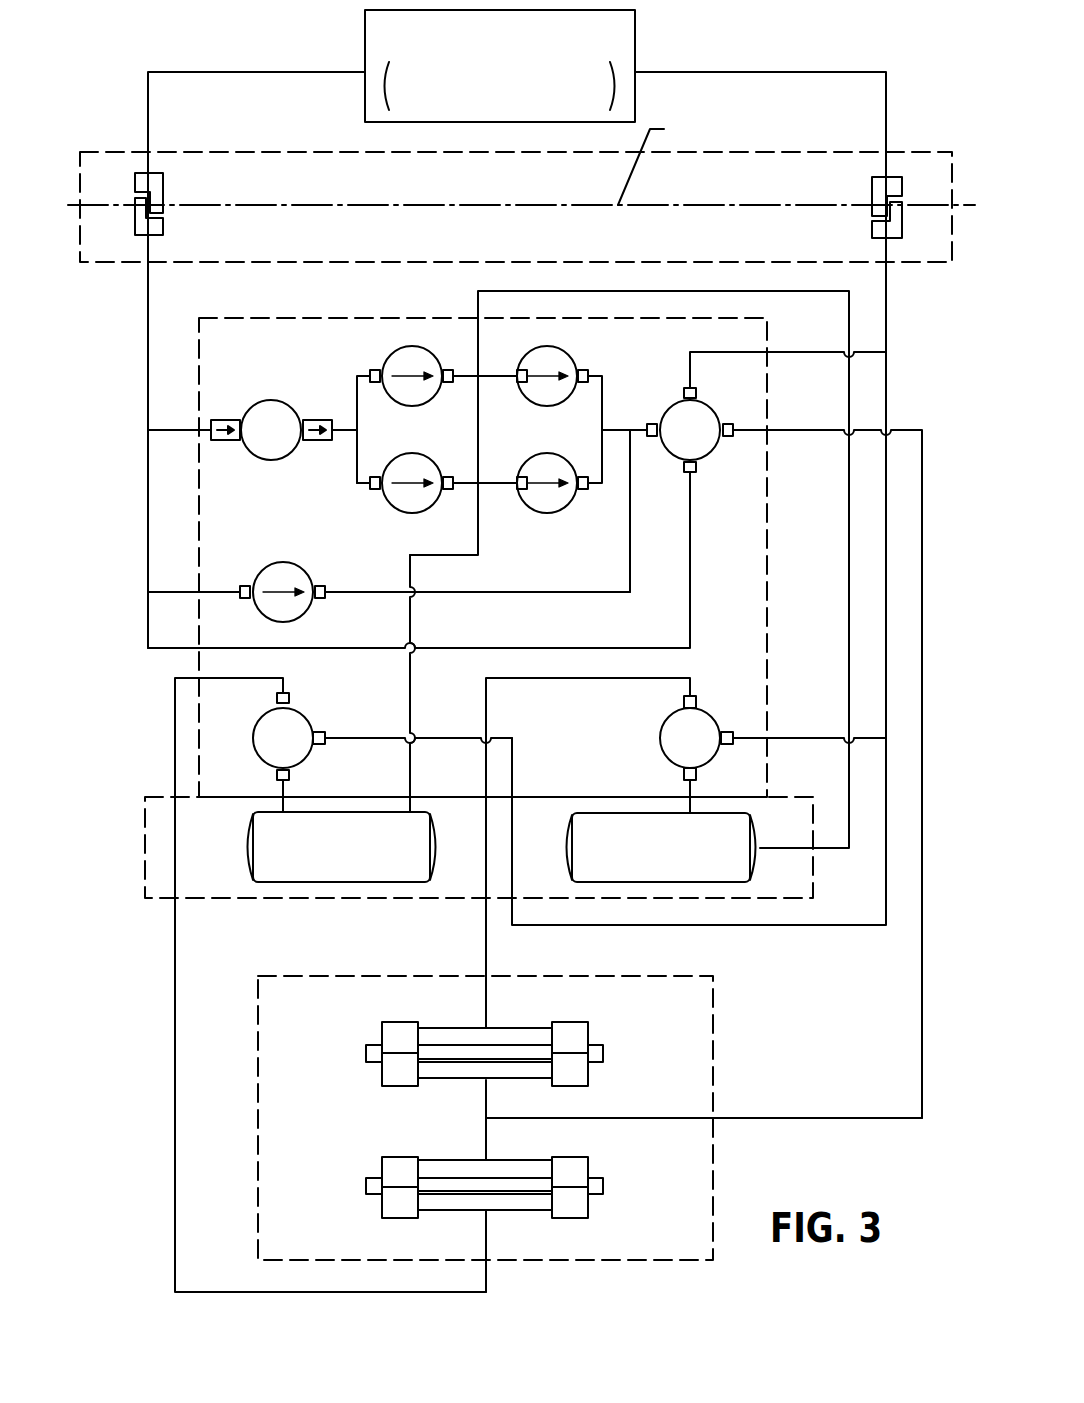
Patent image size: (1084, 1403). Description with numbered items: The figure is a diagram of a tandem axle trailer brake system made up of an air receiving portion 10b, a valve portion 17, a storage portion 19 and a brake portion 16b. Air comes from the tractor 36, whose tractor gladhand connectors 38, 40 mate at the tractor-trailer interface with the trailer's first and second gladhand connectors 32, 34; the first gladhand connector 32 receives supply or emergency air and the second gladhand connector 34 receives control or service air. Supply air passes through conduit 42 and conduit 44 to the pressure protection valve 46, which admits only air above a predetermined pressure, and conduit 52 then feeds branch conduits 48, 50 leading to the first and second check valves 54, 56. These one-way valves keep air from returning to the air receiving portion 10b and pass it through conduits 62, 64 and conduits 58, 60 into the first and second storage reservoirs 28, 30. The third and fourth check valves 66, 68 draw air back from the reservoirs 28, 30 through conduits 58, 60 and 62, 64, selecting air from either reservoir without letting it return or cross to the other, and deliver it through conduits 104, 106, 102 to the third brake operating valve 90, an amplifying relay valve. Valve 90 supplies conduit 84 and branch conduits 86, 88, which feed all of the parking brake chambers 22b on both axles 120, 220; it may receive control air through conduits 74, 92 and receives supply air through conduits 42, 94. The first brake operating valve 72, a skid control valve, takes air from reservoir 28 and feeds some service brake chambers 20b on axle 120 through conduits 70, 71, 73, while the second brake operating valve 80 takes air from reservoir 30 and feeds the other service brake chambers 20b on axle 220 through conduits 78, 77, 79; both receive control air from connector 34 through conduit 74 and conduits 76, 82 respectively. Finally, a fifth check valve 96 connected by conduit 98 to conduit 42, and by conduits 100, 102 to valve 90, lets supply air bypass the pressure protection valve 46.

The tractor 36 is at (636, 27).
The air receiving portion 10b is at (912, 151).
The tractor gladhand connector 38 is at (135, 180).
The first gladhand connector 32 is at (135, 226).
The tractor gladhand connector 40 is at (902, 184).
The second gladhand connector 34 is at (902, 229).
The conduit 42 is at (148, 352).
The conduit 74 is at (886, 317).
The valve portion 17 is at (768, 503).
The storage portion 19 is at (145, 845).
The brake portion 16b is at (714, 993).
The conduit 44 is at (177, 428).
The pressure protection valve 46 is at (267, 460).
The conduit 52 is at (347, 436).
The branch conduit 48 is at (357, 392).
The branch conduit 50 is at (357, 472).
The first check valve 54 is at (386, 352).
The second check valve 56 is at (402, 511).
The conduit 62 is at (466, 378).
The conduit 64 is at (468, 482).
The third check valve 66 is at (566, 352).
The fourth check valve 68 is at (562, 510).
The conduit 104 is at (604, 385).
The conduit 106 is at (600, 449).
The conduit 102 is at (632, 417).
The third brake operating valve 90 is at (717, 452).
The conduit 92 is at (807, 350).
The conduit 84 is at (922, 662).
The conduit 94 is at (690, 573).
The conduit 58 is at (478, 291).
The conduit 60 is at (410, 620).
The conduit 98 is at (175, 590).
The fifth check valve 96 is at (290, 563).
The conduit 100 is at (558, 592).
The conduit 70 is at (552, 683).
The conduit 78 is at (175, 1036).
The second brake operating valve 80 is at (258, 722).
The conduit 82 is at (378, 736).
The first brake operating valve 72 is at (665, 718).
The conduit 76 is at (818, 736).
The second storage reservoir 30 is at (246, 862).
The first storage reservoir 28 is at (762, 866).
The branch conduit 86 is at (486, 1102).
The branch conduit 88 is at (486, 1140).
The axle 120 is at (605, 1053).
The axle 220 is at (605, 1188).
The conduit 71 is at (468, 1026).
The conduit 73 is at (532, 1026).
The conduit 77 is at (463, 1213).
The conduit 79 is at (535, 1213).
The service brake chambers 20b is at (381, 1030).
The parking brake chambers 22b is at (381, 1078).